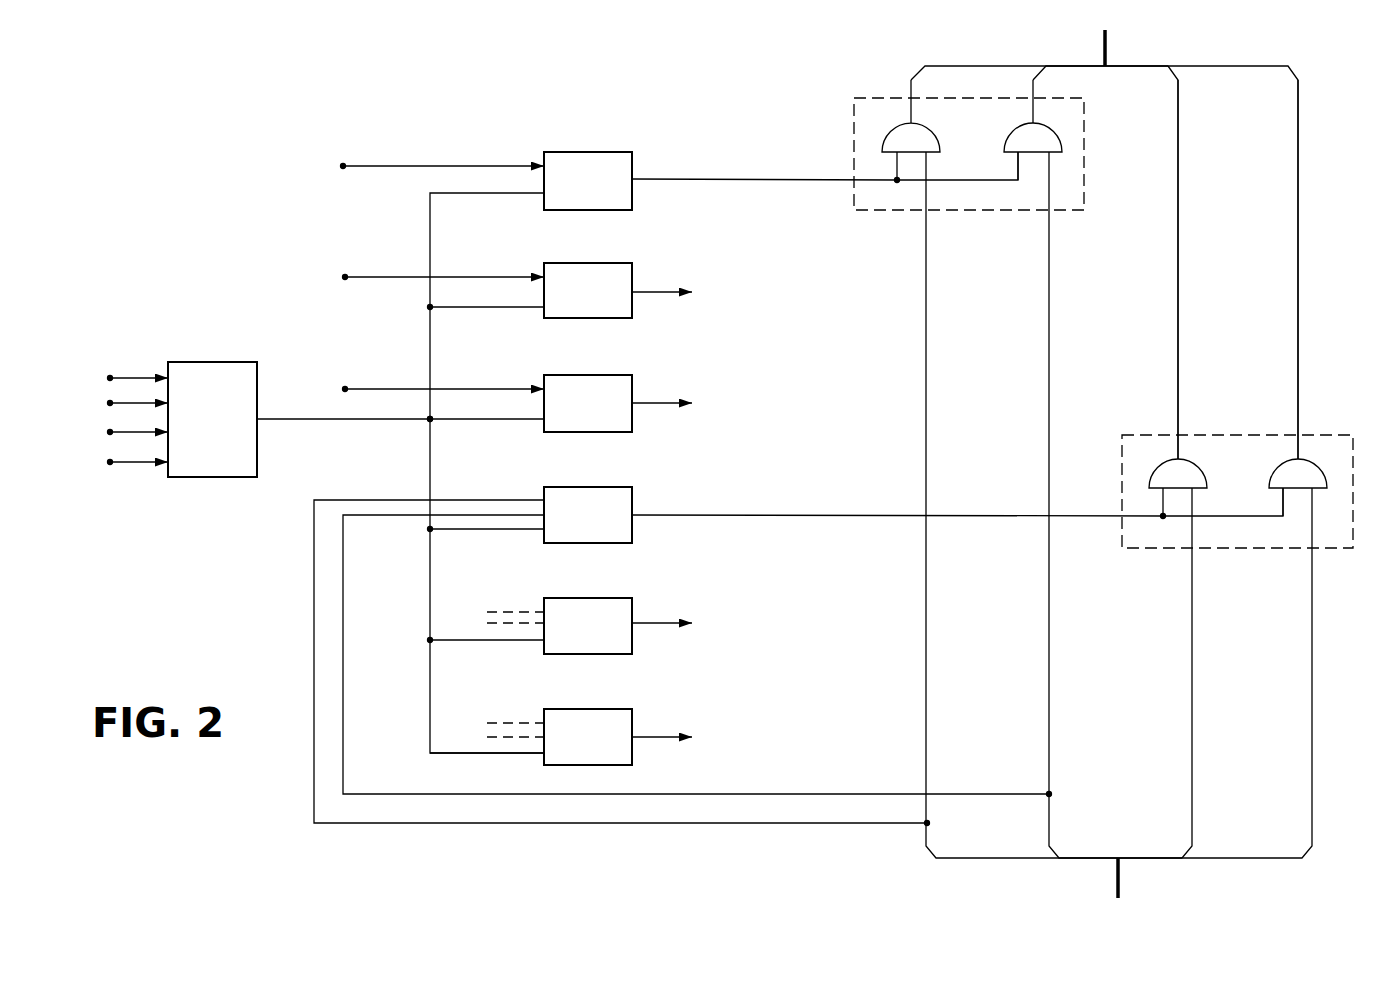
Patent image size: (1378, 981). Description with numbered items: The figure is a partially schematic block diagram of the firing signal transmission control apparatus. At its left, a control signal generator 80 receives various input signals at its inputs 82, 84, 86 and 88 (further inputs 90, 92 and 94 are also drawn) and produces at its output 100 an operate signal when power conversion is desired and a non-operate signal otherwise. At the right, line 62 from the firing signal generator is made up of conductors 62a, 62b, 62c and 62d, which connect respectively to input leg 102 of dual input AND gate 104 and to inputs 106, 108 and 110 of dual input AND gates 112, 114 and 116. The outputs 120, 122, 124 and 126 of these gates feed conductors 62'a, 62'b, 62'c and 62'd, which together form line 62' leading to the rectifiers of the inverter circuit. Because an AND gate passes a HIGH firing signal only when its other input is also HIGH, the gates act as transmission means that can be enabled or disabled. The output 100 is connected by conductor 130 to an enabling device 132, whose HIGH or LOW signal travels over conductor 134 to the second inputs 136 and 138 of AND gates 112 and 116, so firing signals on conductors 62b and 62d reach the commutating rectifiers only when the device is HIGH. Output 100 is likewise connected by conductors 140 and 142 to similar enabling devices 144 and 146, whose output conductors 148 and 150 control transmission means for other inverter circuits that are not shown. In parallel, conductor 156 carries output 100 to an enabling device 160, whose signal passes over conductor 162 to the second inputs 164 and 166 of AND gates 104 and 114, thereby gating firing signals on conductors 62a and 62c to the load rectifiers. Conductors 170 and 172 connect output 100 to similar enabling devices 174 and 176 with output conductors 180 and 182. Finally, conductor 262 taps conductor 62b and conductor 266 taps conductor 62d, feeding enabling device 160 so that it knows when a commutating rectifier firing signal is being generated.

The line 62 is at (1145, 878).
The line 62' is at (1131, 48).
The conductor 62a is at (1318, 746).
The conductor 62b is at (928, 742).
The conductor 62c is at (1200, 736).
The conductor 62d is at (1056, 736).
The conductor 62'a is at (1233, 262).
The conductor 62'b is at (990, 56).
The conductor 62'c is at (1203, 262).
The conductor 62'd is at (1100, 80).
The control signal generator 80 is at (226, 431).
The input 82 is at (108, 378).
The input 84 is at (108, 403).
The input 86 is at (108, 432).
The input 88 is at (108, 462).
The input line 90 is at (343, 166).
The input line 92 is at (345, 277).
The input line 94 is at (345, 389).
The output 100 is at (268, 422).
The input leg 102 is at (1334, 502).
The dual input AND gate 104 is at (1316, 472).
The input 106 is at (930, 162).
The input 108 is at (1204, 495).
The input 110 is at (1050, 162).
The dual input AND gate 112 is at (924, 140).
The dual input AND gate 114 is at (1192, 474).
The dual input AND gate 116 is at (1050, 134).
The output 120 is at (1294, 464).
The output 122 is at (909, 128).
The output 124 is at (1176, 464).
The output 126 is at (1033, 128).
The conductor 130 is at (475, 196).
The enabling device 132 is at (608, 192).
The conductor 134 is at (692, 179).
The second input 136 is at (895, 166).
The second input 138 is at (1014, 168).
The conductor 140 is at (503, 310).
The conductor 142 is at (487, 422).
The enabling device 144 is at (608, 301).
The enabling device 146 is at (608, 414).
The output conductor 148 is at (690, 273).
The output conductor 150 is at (690, 385).
The conductor 156 is at (505, 532).
The enabling device 160 is at (608, 526).
The conductor 162 is at (722, 502).
The second input 164 is at (1282, 502).
The second input 166 is at (1162, 502).
The conductor 170 is at (510, 643).
The conductor 172 is at (500, 756).
The enabling device 174 is at (608, 637).
The enabling device 176 is at (608, 748).
The output conductor 180 is at (684, 616).
The output conductor 182 is at (684, 735).
The conductor 262 is at (724, 827).
The conductor 266 is at (804, 790).